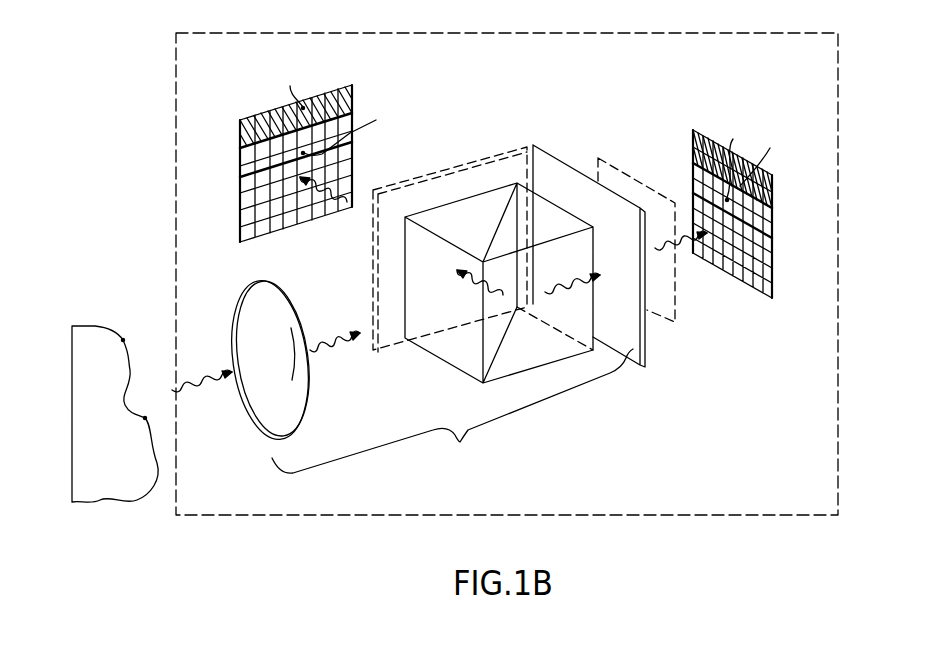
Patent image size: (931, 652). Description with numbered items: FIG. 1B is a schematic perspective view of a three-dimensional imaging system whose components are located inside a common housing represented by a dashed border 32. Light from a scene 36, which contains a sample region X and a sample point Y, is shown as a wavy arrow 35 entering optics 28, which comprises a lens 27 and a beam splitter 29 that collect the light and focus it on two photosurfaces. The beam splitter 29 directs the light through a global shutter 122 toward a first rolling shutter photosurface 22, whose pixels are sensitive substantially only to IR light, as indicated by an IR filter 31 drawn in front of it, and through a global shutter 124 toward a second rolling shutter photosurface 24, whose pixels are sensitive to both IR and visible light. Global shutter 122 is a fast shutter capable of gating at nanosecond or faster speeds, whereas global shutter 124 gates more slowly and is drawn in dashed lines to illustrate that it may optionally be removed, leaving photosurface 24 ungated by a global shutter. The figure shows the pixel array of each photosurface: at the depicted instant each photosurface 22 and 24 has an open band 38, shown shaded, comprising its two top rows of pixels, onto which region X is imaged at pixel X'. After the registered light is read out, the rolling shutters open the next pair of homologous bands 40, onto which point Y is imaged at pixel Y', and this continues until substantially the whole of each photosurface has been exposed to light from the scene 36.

The first rolling shutter photosurface 22 is at (714, 124).
The second rolling shutter photosurface 24 is at (334, 80).
The lens 27 is at (282, 296).
The optics 28 is at (452, 411).
The beam splitter 29 is at (522, 198).
The IR filter 31 is at (678, 303).
The dashed border 32 is at (785, 31).
The wavy arrow 35 is at (333, 338).
The scene 36 is at (97, 295).
The open band 38 is at (240, 139).
The next pair of homologous bands 40 is at (240, 169).
The global shutter 122 is at (578, 167).
The global shutter 124 is at (455, 163).